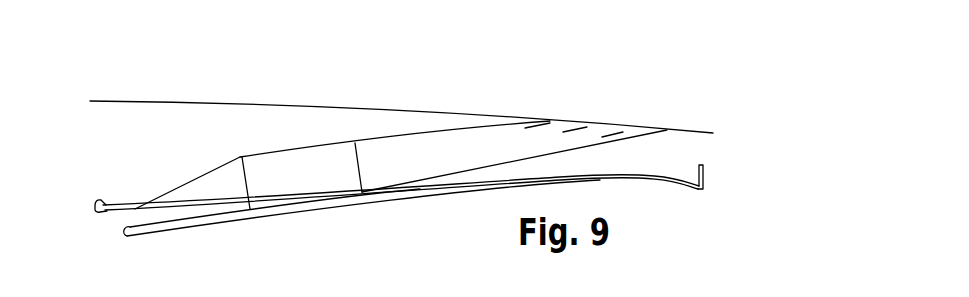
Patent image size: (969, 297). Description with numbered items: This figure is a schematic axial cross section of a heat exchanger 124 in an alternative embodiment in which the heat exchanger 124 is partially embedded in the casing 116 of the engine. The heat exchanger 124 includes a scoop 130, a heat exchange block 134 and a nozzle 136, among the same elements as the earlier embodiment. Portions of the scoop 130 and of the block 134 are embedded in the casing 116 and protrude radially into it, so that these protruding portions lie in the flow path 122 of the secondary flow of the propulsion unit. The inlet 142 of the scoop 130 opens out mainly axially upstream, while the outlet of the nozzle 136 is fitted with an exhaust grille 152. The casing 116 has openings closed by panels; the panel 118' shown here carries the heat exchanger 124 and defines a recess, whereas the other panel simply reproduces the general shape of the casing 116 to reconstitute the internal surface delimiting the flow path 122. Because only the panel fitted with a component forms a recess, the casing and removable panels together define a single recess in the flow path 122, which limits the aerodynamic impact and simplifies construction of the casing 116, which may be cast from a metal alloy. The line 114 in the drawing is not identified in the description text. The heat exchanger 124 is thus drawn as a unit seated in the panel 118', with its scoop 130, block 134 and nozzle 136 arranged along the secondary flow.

The outer flow surface line 114 is at (132, 100).
The casing 116 is at (113, 204).
The panel 118' is at (403, 218).
The flow path 122 is at (375, 227).
The heat exchanger 124 is at (257, 143).
The scoop 130 is at (190, 182).
The heat exchange block 134 is at (315, 147).
The nozzle 136 is at (407, 133).
The inlet 142 is at (127, 219).
The exhaust grille 152 is at (572, 130).